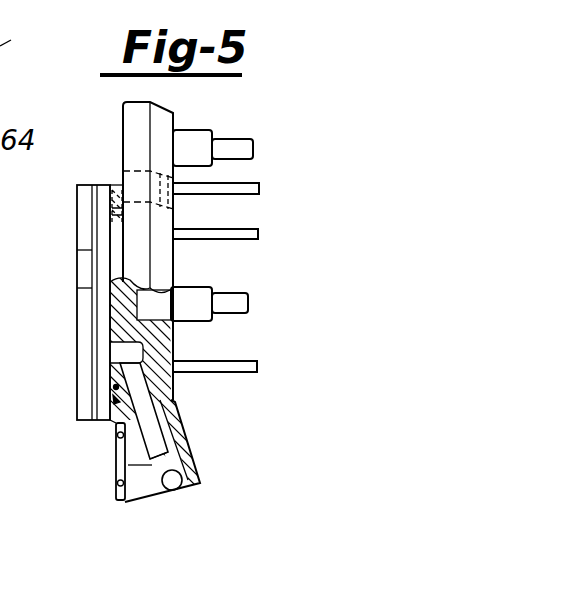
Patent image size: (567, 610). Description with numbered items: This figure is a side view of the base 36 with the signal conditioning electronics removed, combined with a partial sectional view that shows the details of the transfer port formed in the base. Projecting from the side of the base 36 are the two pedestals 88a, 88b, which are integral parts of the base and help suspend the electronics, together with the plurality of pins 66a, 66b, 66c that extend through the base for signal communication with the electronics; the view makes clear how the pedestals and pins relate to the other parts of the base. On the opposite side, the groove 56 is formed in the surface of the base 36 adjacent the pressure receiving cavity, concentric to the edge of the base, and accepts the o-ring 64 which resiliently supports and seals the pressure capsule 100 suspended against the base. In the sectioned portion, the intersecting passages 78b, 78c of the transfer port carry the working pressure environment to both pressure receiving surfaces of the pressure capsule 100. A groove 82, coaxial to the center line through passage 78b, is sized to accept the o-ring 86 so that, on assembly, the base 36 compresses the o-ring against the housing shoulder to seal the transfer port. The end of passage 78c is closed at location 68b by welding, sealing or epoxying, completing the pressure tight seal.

The base 36 is at (276, 103).
The groove 56 is at (117, 178).
The o-ring 64 is at (112, 212).
The pressure capsule 100 is at (110, 185).
The pedestal 88a is at (250, 305).
The pedestal 88b is at (253, 150).
The pin 66a is at (220, 375).
The pin 66b is at (240, 185).
The pin 66c is at (238, 230).
The passage 78b is at (147, 460).
The passage 78c is at (160, 432).
The groove 82 is at (117, 500).
The o-ring 86 is at (115, 484).
The sealing location 68b is at (175, 490).